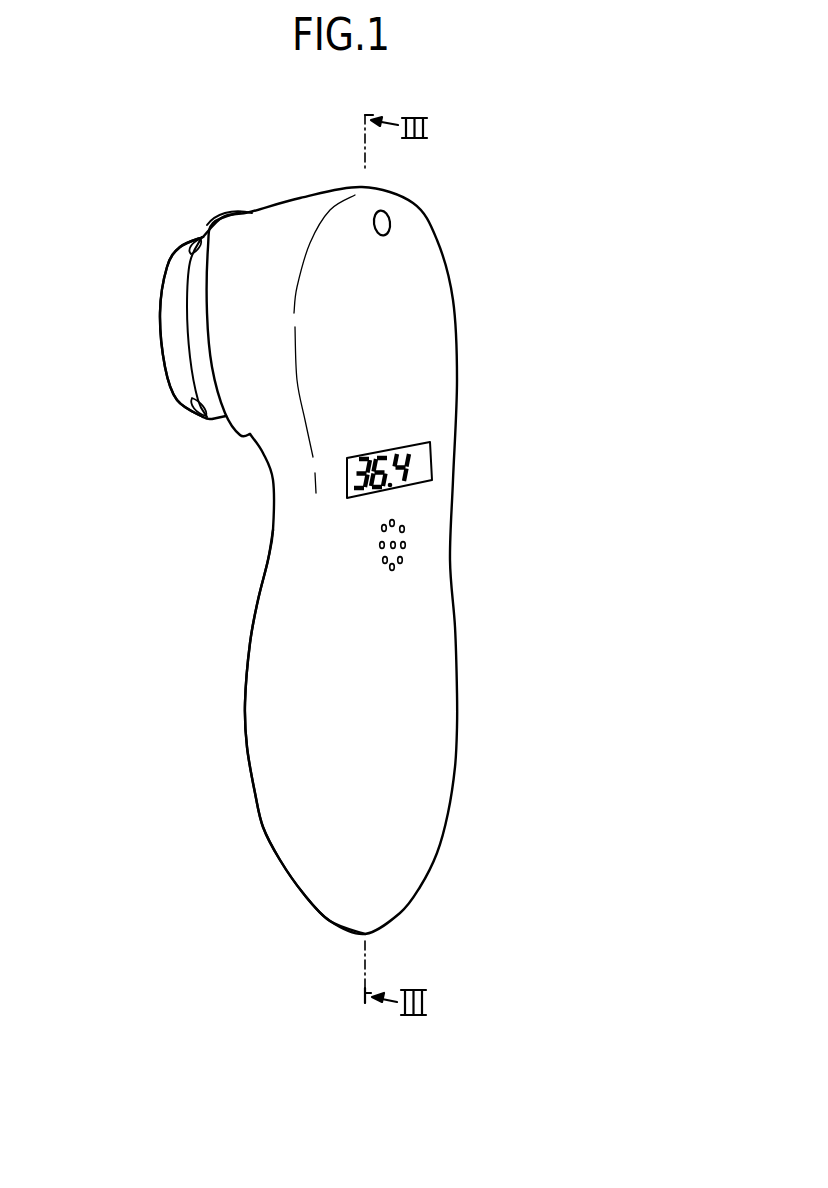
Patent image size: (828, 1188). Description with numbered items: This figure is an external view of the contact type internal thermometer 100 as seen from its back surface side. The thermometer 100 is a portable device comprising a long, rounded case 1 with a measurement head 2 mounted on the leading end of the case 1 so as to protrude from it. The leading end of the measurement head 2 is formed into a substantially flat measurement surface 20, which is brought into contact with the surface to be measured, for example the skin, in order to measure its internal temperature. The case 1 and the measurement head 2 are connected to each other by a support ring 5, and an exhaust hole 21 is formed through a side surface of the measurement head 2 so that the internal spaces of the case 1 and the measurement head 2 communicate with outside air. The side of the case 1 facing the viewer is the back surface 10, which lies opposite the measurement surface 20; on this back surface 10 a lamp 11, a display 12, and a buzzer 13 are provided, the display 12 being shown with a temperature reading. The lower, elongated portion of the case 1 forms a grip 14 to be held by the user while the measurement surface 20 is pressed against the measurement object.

The contact type internal thermometer 100 is at (567, 858).
The case 1 is at (460, 378).
The back surface 10 is at (435, 412).
The grip 14 is at (278, 802).
The lamp 11 is at (390, 217).
The display 12 is at (432, 455).
The buzzer 13 is at (397, 538).
The measurement head 2 is at (170, 287).
The measurement surface 20 is at (160, 322).
The support ring 5 is at (222, 227).
The exhaust hole 21 is at (195, 240).